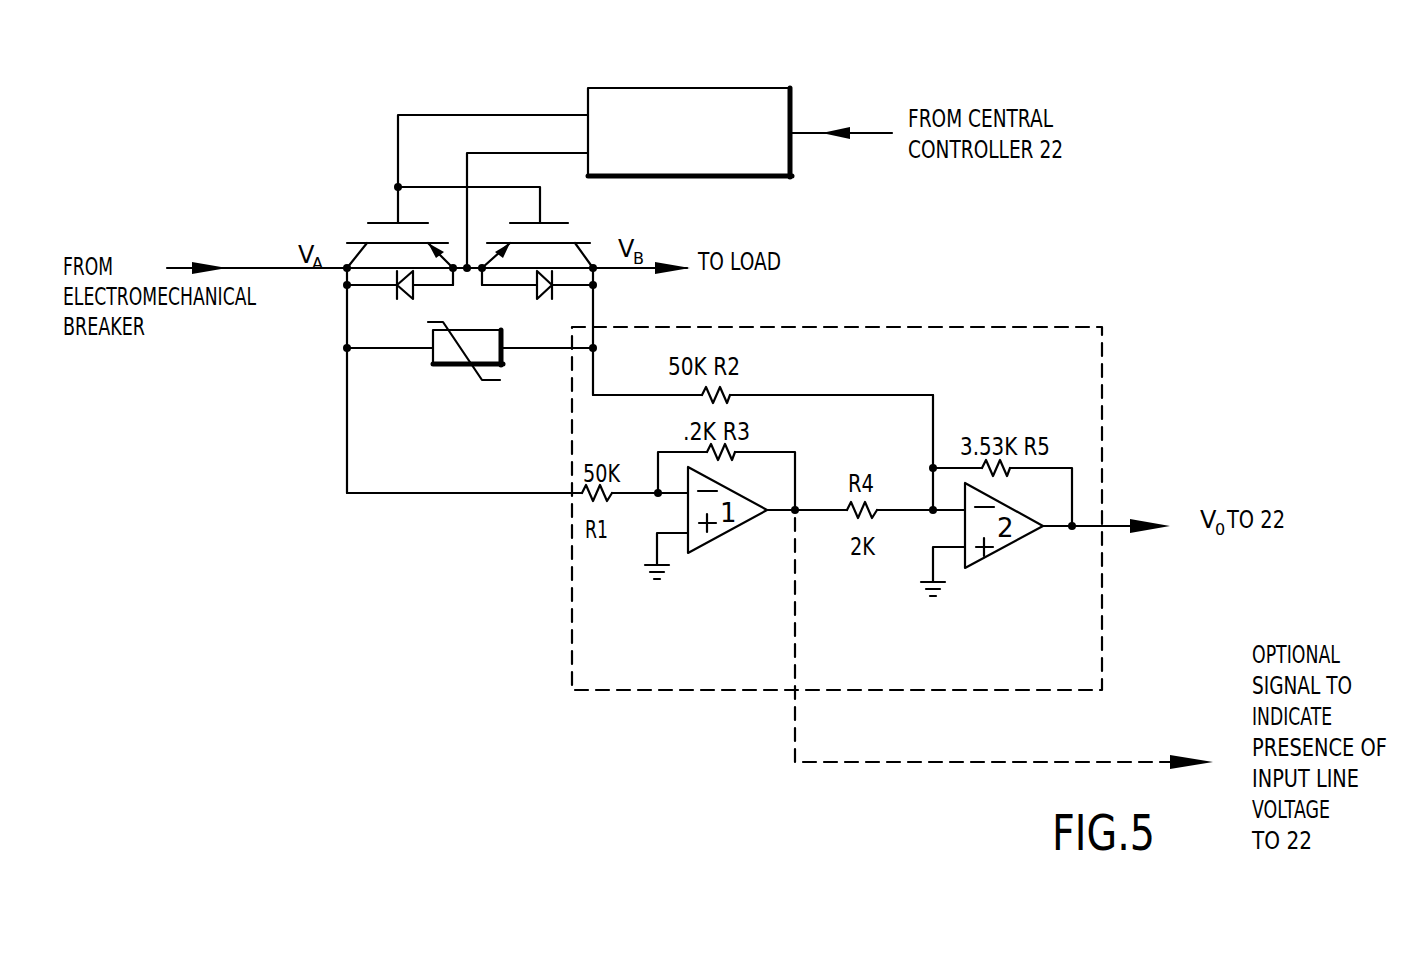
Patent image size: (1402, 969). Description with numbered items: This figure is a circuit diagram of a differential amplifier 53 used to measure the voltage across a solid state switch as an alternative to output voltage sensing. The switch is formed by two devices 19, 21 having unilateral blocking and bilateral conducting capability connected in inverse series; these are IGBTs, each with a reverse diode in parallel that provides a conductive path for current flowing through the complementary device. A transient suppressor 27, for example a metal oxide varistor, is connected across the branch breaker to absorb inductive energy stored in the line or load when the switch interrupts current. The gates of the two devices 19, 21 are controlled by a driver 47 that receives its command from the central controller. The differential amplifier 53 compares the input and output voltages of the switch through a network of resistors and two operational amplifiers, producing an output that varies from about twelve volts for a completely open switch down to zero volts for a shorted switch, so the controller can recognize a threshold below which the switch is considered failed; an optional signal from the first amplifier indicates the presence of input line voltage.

The solid state switch device 19 is at (383, 215).
The solid state switch device 21 is at (573, 212).
The transient suppressor 27 is at (452, 368).
The driver 47 is at (620, 87).
The differential amplifier 53 is at (1102, 327).